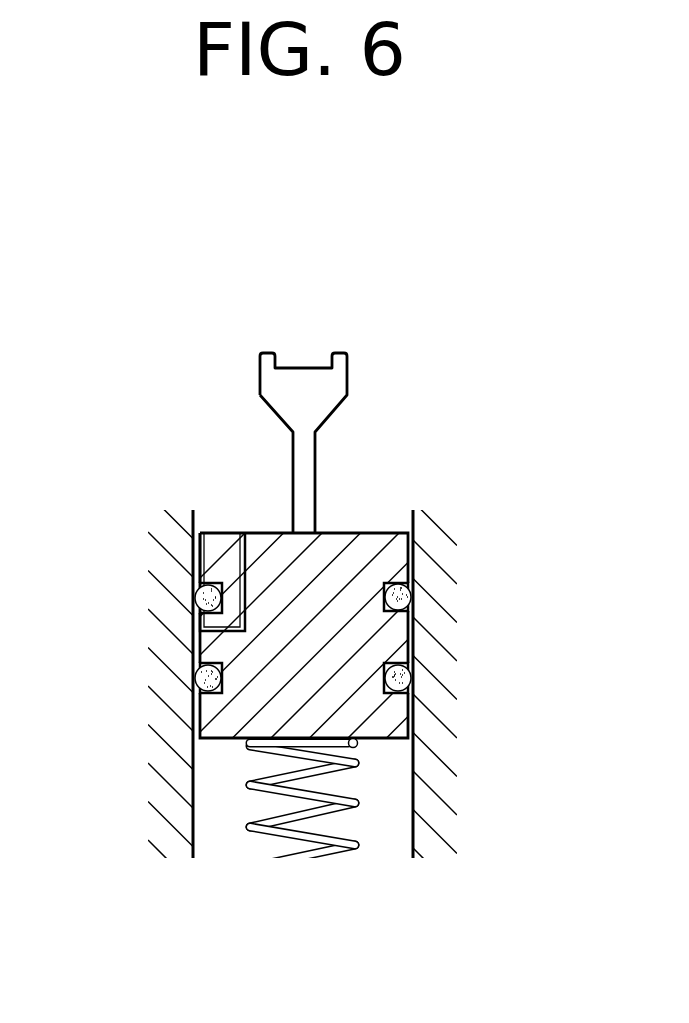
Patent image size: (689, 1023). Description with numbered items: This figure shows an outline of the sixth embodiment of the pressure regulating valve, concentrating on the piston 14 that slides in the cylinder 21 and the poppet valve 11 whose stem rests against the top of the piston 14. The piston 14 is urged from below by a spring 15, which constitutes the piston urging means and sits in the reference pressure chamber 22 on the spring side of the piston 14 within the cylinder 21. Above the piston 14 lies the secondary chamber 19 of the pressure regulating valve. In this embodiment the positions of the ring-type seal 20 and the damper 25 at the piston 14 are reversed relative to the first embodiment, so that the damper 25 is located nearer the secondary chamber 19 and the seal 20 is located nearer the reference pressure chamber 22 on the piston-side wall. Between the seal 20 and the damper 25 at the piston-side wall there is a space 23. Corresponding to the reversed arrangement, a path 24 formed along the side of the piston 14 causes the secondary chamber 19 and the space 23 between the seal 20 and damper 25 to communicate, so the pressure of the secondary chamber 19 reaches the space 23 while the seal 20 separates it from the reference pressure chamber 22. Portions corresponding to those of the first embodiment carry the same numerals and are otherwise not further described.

The poppet valve 11 is at (333, 383).
The piston 14 is at (395, 635).
The spring 15 is at (347, 800).
The secondary chamber 19 is at (373, 477).
The ring-type seal 20 is at (198, 677).
The cylinder 21 is at (163, 813).
The reference pressure chamber 22 is at (210, 843).
The space 23 is at (193, 660).
The path 24 is at (242, 532).
The damper 25 is at (200, 598).